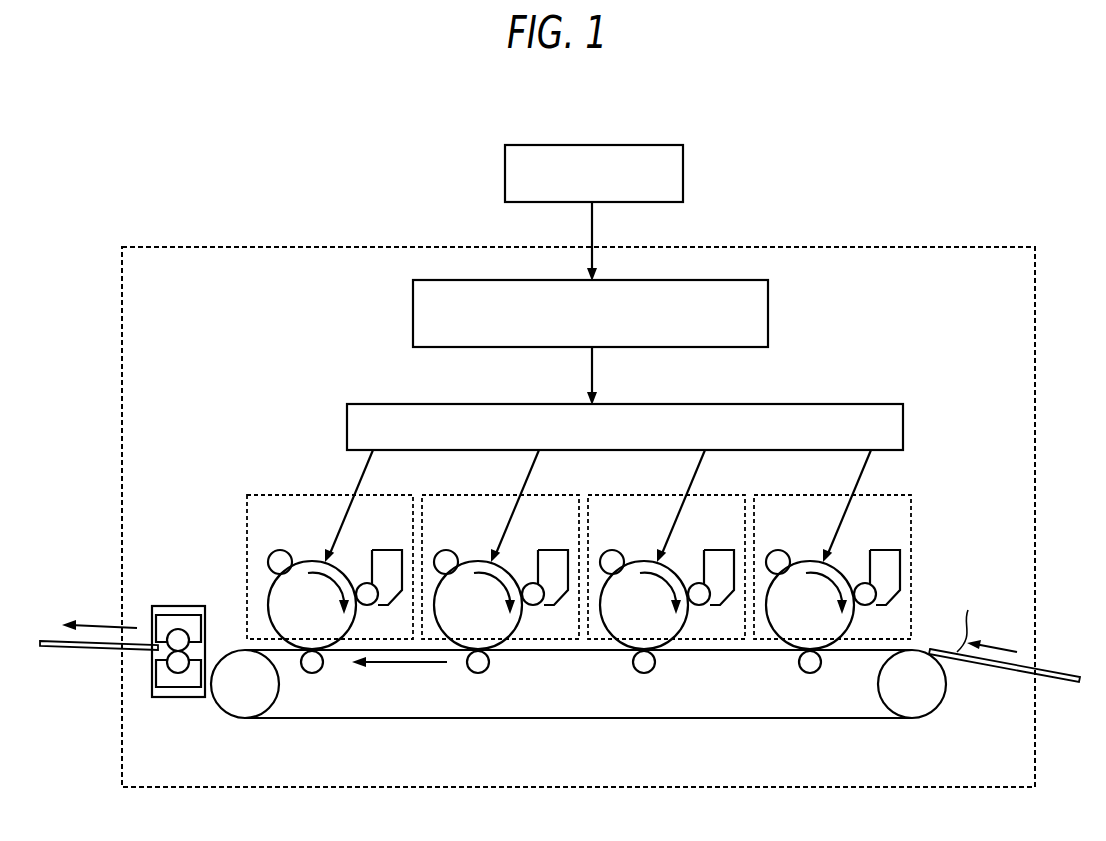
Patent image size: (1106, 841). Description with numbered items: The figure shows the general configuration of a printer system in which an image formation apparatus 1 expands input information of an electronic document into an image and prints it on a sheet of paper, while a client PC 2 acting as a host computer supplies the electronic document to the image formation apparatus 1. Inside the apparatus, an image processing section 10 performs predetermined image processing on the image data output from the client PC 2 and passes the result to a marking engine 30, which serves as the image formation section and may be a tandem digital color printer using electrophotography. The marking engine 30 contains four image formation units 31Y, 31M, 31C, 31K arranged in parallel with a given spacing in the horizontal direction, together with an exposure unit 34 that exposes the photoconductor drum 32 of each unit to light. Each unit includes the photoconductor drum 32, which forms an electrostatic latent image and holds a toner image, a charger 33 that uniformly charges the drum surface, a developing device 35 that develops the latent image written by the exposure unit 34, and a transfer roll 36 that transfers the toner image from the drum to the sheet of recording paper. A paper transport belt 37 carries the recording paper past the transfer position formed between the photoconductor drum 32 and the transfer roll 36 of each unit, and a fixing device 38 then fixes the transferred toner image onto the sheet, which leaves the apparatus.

The image formation apparatus 1 is at (882, 247).
The client PC 2 is at (505, 170).
The image processing section 10 is at (768, 300).
The marking engine 30 is at (898, 394).
The exposure unit 34 is at (816, 404).
The image formation unit 31K is at (290, 493).
The image formation unit 31C is at (464, 493).
The image formation unit 31M is at (630, 493).
The image formation unit 31Y is at (831, 581).
The photoconductor drum 32 is at (823, 577).
The charger 33 is at (794, 542).
The developing device 35 is at (901, 560).
The transfer roll 36 is at (767, 682).
The paper transport belt 37 is at (545, 652).
The fixing device 38 is at (190, 606).